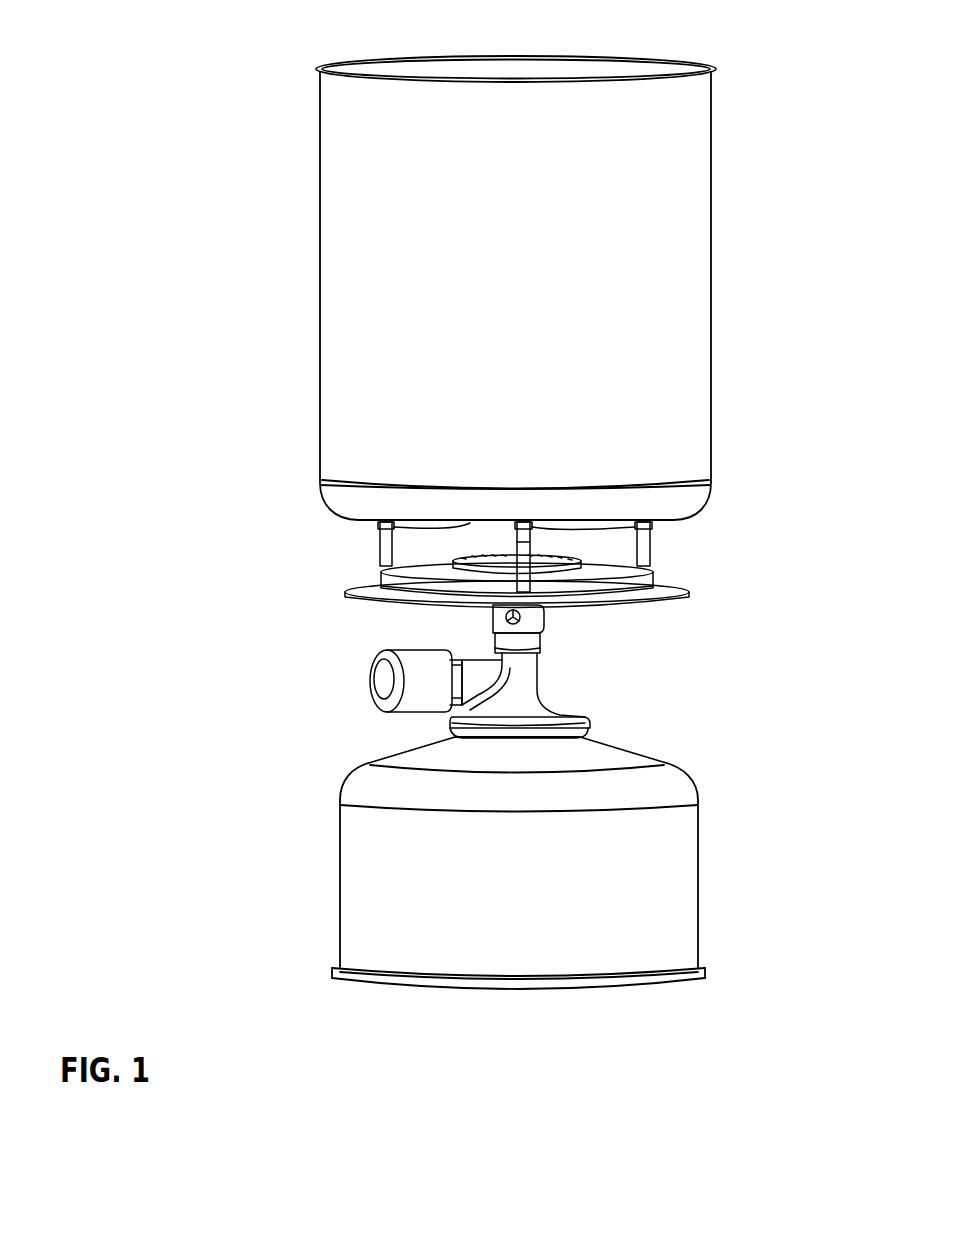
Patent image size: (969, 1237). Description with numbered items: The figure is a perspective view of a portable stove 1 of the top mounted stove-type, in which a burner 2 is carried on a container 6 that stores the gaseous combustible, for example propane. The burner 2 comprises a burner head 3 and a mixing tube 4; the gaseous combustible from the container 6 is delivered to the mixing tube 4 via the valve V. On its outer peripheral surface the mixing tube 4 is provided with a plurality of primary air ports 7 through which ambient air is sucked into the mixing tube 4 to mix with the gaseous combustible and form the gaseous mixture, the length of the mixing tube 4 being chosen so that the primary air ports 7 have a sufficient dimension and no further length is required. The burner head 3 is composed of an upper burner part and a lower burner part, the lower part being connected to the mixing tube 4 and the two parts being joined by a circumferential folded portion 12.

The portable stove 1 is at (806, 340).
The burner 2 is at (683, 645).
The burner head 3 is at (656, 574).
The mixing tube 4 is at (493, 620).
The container 6 is at (516, 899).
The primary air ports 7 is at (544, 620).
The circumferential folded portion 12 is at (664, 598).
The valve V is at (393, 707).